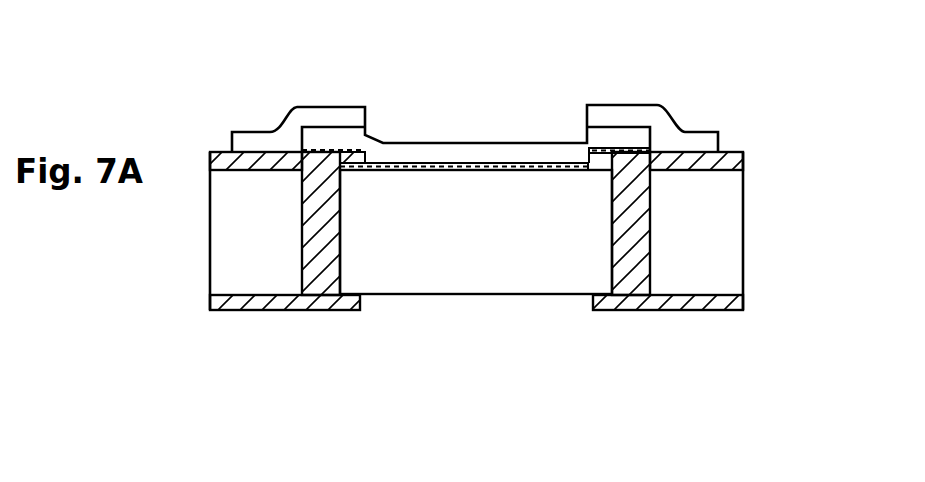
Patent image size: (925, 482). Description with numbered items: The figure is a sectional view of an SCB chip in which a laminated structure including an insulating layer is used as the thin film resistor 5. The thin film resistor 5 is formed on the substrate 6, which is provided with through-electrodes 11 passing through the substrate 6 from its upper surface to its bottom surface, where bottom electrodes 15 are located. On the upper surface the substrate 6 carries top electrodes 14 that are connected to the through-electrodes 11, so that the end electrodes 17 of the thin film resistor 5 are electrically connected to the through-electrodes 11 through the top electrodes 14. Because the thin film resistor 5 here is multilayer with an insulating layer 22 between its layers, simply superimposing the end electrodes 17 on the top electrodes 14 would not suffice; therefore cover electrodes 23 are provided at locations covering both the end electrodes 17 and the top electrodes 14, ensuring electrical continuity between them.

The thin film resistor 5 is at (473, 152).
The substrate 6 is at (525, 258).
The through-electrode 11 is at (650, 222).
The top electrode 14 is at (743, 153).
The bottom electrode 15 is at (702, 302).
The end electrode 17 is at (617, 148).
The insulating layer 22 is at (340, 163).
The cover electrode 23 is at (705, 130).